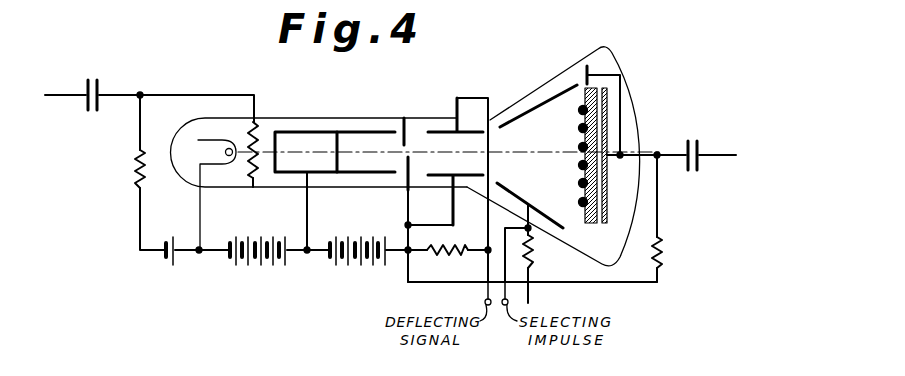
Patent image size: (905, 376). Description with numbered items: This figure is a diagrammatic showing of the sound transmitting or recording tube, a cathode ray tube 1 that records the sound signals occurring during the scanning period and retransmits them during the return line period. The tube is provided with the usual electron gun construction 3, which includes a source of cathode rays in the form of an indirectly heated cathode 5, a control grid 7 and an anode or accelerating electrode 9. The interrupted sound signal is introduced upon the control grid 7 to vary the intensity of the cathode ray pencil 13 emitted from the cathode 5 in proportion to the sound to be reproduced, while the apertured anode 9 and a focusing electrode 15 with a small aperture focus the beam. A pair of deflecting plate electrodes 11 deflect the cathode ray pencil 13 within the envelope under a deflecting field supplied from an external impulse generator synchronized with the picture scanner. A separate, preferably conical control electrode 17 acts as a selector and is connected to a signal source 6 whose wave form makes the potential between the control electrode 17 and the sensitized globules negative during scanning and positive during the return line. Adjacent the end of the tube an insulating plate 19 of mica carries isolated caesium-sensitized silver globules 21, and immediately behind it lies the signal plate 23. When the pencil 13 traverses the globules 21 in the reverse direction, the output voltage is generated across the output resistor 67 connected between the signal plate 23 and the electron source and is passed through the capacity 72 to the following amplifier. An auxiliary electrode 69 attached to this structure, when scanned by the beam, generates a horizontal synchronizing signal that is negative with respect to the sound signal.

The cathode ray tube 1 is at (542, 85).
The electron gun construction 3 is at (291, 132).
The cathode 5 is at (228, 148).
The signal source 6 is at (56, 90).
The control grid 7 is at (248, 122).
The anode or accelerating electrode 9 is at (331, 132).
The deflecting plate electrodes 11 is at (441, 132).
The cathode ray pencil 13 is at (407, 118).
The focusing electrode 15 is at (408, 175).
The control electrode 17 is at (516, 110).
The insulating plate 19 is at (589, 225).
The silver globules 21 is at (583, 94).
The signal plate 23 is at (608, 201).
The output resistor 67 is at (662, 254).
The auxiliary electrode 69 is at (612, 71).
The capacity 72 is at (698, 142).